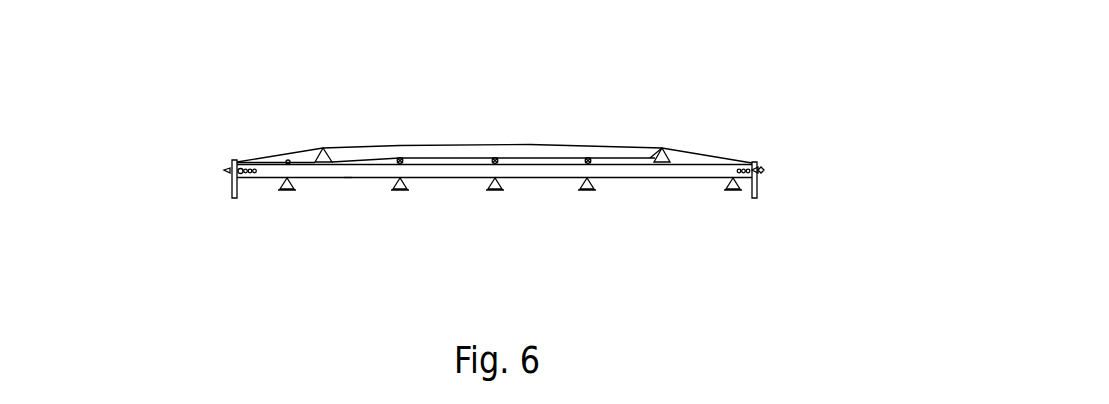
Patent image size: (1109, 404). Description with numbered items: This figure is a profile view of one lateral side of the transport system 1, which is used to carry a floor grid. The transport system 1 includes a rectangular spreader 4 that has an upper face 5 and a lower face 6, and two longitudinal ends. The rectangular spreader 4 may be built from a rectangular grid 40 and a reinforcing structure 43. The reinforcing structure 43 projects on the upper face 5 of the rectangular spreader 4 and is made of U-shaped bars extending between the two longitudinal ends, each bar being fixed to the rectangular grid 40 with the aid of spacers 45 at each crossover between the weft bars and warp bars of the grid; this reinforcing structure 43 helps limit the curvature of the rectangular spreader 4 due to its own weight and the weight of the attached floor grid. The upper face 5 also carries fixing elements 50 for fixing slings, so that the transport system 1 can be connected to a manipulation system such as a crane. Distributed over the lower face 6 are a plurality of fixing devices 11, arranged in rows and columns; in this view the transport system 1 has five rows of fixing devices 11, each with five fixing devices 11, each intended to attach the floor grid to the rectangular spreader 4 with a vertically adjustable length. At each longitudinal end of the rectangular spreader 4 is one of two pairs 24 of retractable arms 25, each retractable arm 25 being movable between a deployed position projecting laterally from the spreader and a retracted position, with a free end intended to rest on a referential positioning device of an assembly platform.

The transport system 1 is at (676, 134).
The rectangular spreader 4 is at (530, 144).
The upper face 5 is at (448, 146).
The lower face 6 is at (436, 179).
The fixing devices 11 is at (287, 190).
The pairs of retractable arms 24 is at (219, 170).
The retractable arms 25 is at (232, 198).
The rectangular grid 40 is at (348, 178).
The reinforcing structure 43 is at (392, 157).
The spacers 45 is at (400, 157).
The fixing elements 50 is at (323, 146).